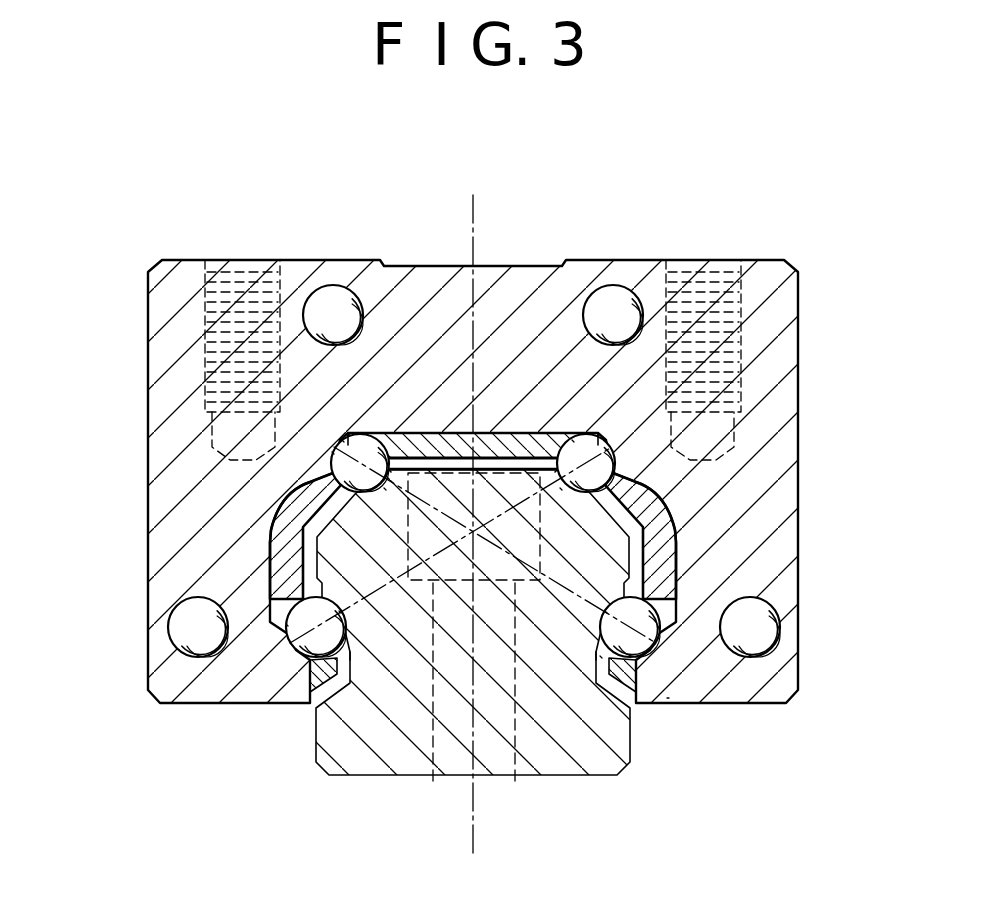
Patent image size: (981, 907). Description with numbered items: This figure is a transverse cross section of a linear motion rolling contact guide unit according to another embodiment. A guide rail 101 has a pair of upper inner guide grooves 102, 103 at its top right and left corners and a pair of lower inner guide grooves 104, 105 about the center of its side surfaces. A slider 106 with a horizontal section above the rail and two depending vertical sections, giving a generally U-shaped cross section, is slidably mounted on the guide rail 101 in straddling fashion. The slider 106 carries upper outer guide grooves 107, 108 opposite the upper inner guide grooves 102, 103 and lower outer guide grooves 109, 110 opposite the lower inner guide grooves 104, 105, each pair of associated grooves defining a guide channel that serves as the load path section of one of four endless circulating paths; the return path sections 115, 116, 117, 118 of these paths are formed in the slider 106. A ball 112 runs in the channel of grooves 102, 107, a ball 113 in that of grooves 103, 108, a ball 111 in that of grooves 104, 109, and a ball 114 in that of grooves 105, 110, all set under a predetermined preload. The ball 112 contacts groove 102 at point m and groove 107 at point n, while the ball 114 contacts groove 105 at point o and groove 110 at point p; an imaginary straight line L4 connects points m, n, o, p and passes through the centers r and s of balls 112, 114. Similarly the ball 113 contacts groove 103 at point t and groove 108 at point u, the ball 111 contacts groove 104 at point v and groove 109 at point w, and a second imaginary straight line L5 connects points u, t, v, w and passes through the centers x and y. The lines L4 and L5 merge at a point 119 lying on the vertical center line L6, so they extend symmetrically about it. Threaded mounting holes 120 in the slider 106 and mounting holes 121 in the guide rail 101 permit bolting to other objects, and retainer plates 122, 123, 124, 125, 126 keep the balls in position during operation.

The guide rail 101 is at (617, 777).
The upper inner guide groove 102 is at (616, 472).
The upper inner guide groove 103 is at (332, 466).
The lower inner guide groove 104 is at (658, 604).
The lower inner guide groove 105 is at (287, 620).
The slider 106 is at (182, 327).
The upper outer guide groove 107 is at (570, 438).
The upper outer guide groove 108 is at (346, 438).
The lower outer guide groove 109 is at (652, 690).
The lower outer guide groove 110 is at (318, 686).
The ball 111 is at (604, 652).
The ball 112 is at (668, 437).
The ball 113 is at (389, 450).
The ball 114 is at (342, 640).
The return path section 115 is at (625, 300).
The return path section 116 is at (328, 298).
The return path section 117 is at (757, 637).
The return path section 118 is at (190, 630).
The merging point 119 is at (465, 545).
The mounting hole 120 is at (220, 275).
The mounting hole 121 is at (516, 782).
The retainer plate 122 is at (665, 662).
The retainer plate 123 is at (668, 516).
The retainer plate 124 is at (445, 431).
The retainer plate 125 is at (245, 521).
The retainer plate 126 is at (312, 706).
The imaginary straight line L4 is at (403, 577).
The imaginary straight line L5 is at (543, 577).
The vertical center line L6 is at (470, 820).
The point of contact u is at (343, 441).
The center of ball x is at (333, 453).
The center of ball r is at (573, 441).
The point of contact n is at (605, 441).
The point of contact t is at (385, 489).
The point of contact m is at (561, 489).
The center of ball s is at (287, 625).
The point of contact o is at (340, 612).
The point of contact v is at (606, 612).
The center of ball y is at (601, 657).
The point of contact p is at (274, 703).
The point of contact w is at (668, 698).